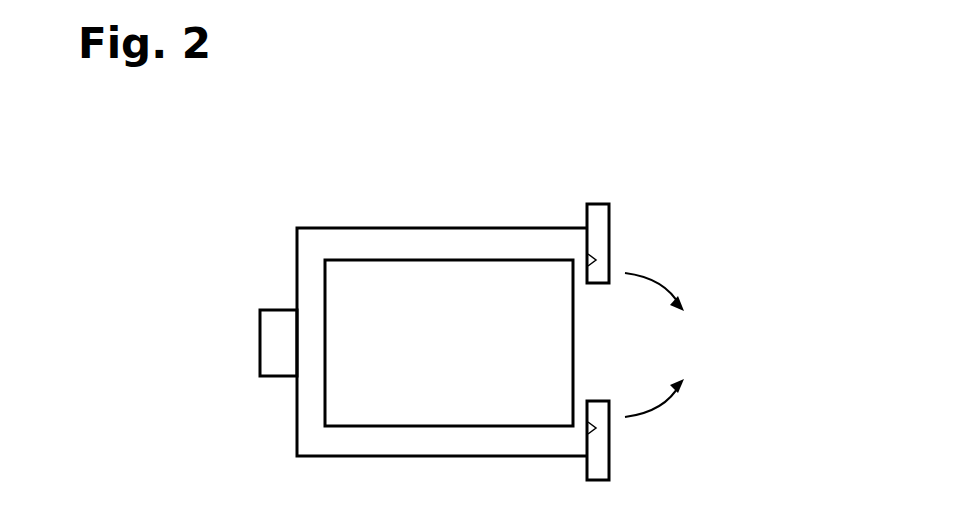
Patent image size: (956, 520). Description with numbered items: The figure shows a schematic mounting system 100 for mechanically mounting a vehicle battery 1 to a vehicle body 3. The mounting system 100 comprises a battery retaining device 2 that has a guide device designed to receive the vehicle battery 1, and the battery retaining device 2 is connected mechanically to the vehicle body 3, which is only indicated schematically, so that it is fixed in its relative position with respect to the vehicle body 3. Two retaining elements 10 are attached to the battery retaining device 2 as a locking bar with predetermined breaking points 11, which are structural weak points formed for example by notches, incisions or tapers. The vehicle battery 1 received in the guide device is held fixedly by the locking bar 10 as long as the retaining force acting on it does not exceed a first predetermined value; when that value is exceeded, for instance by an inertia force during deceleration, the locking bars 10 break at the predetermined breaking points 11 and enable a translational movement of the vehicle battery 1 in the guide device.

The mounting system 100 is at (203, 208).
The vehicle battery 1 is at (414, 260).
The battery retaining device 2 is at (479, 228).
The vehicle body 3 is at (270, 308).
The retaining element 10 is at (609, 228).
The predetermined breaking point 11 is at (603, 284).